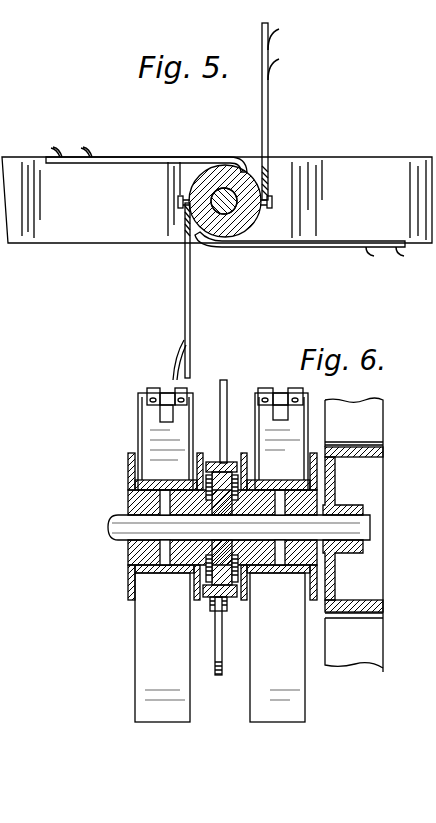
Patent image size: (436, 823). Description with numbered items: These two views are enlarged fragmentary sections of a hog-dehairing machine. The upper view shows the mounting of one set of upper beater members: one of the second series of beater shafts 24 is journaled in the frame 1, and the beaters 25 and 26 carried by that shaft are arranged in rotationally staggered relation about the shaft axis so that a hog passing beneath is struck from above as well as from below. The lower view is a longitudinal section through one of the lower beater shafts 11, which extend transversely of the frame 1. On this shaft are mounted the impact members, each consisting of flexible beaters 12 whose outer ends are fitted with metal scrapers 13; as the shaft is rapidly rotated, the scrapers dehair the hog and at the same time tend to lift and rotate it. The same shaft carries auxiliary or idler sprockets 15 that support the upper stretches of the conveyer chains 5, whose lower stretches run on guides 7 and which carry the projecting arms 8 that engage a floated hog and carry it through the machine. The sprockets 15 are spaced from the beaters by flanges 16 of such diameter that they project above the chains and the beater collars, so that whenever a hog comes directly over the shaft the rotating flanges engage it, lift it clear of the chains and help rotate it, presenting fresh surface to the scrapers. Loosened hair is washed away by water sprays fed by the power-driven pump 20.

In FIG. 5, the frame 1 is at (97, 220).
In FIG. 6, the frame 1 is at (362, 430).
In FIG. 6, the conveyer chains 5 is at (188, 600).
In FIG. 6, the guides 7 is at (213, 613).
In FIG. 6, the projecting arms 8 is at (226, 397).
In FIG. 6, the beater shafts 11 is at (128, 527).
In FIG. 6, the flexible beaters 12 is at (138, 436).
In FIG. 6, the metal scrapers 13 is at (143, 420).
In FIG. 6, the auxiliary or idler sprockets 15 is at (197, 580).
In FIG. 6, the flanges 16 is at (130, 463).
In FIG. 6, the power-driven pump 20 is at (12, 682).
In FIG. 5, the beater shafts 24 is at (230, 213).
In FIG. 5, the beaters 25 is at (270, 99).
In FIG. 5, the beaters 26 is at (146, 147).